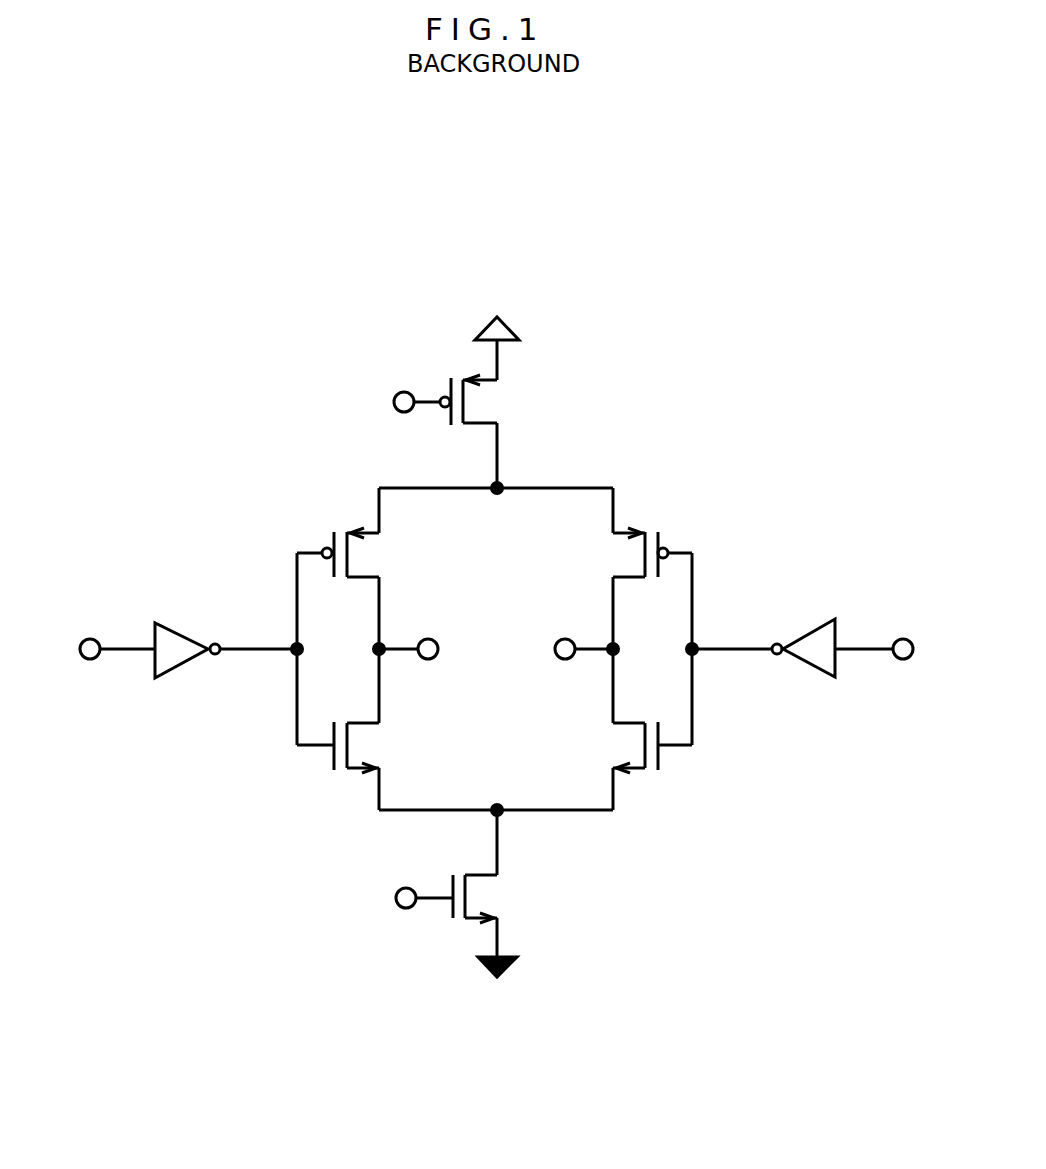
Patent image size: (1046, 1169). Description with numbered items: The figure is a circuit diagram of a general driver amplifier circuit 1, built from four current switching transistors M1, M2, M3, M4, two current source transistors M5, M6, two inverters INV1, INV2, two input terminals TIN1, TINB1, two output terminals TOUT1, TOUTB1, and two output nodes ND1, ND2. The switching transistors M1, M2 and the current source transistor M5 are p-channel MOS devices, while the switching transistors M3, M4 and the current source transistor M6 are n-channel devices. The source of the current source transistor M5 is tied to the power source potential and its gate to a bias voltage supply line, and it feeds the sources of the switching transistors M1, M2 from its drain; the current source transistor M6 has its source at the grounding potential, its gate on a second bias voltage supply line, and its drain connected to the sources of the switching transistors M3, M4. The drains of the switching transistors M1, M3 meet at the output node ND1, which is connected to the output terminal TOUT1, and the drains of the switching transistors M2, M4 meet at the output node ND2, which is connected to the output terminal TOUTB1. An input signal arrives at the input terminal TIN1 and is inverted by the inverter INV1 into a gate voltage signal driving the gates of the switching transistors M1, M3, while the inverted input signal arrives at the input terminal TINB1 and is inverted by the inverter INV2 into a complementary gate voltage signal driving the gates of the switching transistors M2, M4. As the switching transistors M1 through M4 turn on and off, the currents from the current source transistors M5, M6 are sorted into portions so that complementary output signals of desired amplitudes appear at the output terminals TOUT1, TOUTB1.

The driver amplifier circuit 1 is at (502, 194).
The switching transistor M1 is at (360, 550).
The switching transistor M2 is at (630, 552).
The switching transistor M3 is at (362, 747).
The switching transistor M4 is at (632, 747).
The current source transistor M5 is at (477, 403).
The current source transistor M6 is at (480, 898).
The inverter INV1 is at (187, 668).
The inverter INV2 is at (803, 662).
The input terminal TIN1 is at (90, 660).
The input terminal TINB1 is at (903, 660).
The output terminal TOUT1 is at (450, 623).
The output terminal TOUTB1 is at (563, 638).
The output node ND1 is at (375, 645).
The output node ND2 is at (618, 645).